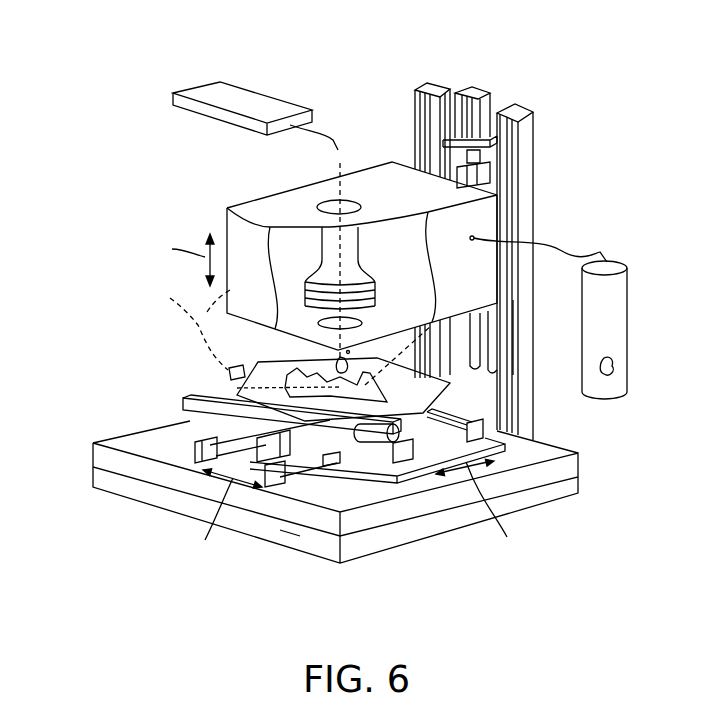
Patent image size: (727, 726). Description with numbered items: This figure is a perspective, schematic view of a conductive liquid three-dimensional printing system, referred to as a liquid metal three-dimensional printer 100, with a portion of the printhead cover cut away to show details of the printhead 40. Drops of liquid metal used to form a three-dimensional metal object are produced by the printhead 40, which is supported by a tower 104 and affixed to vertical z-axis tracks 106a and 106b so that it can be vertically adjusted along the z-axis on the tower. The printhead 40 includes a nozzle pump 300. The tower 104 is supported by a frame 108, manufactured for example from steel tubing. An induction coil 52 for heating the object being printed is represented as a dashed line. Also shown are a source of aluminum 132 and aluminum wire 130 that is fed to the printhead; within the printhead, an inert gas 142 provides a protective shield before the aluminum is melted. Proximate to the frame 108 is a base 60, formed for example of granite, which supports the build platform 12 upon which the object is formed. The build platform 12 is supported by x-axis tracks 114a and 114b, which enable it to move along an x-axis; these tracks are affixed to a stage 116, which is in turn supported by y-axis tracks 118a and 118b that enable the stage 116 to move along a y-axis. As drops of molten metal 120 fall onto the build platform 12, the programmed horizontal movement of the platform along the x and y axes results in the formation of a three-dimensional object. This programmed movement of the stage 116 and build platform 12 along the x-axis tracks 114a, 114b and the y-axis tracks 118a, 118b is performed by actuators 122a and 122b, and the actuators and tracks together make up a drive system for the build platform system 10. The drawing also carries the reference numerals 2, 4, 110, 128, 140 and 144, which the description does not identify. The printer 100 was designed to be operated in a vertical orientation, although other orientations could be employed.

The food printing system 2 is at (87, 185).
The liquid metal 3D printer 100 is at (552, 90).
The tower 104 is at (560, 182).
The vertical z-axis track 106a is at (420, 107).
The vertical z-axis track 106b is at (490, 167).
The source of aluminum 132 is at (208, 92).
The aluminum wire 130 is at (340, 205).
The printhead 40 is at (263, 206).
The nozzle pump 300 is at (318, 287).
The nozzle 128 is at (318, 322).
The induction coil 52 is at (287, 334).
The cable 144 is at (607, 262).
The cartridge 140 is at (582, 370).
The inert gas 142 is at (618, 366).
The frame 108 is at (100, 478).
The upper base plate 110 is at (128, 441).
The base 60 is at (268, 513).
The stage 116 is at (232, 395).
The build platform 12 is at (235, 401).
The x-axis track 114a is at (367, 447).
The x-axis track 114b is at (463, 423).
The y-axis track 118a is at (212, 450).
The y-axis track 118b is at (340, 470).
The actuator 122a is at (240, 371).
The actuator 122b is at (280, 465).
The print bed 4 is at (343, 393).
The build platform system 10 is at (270, 368).
The drops of molten metal 120 is at (340, 363).